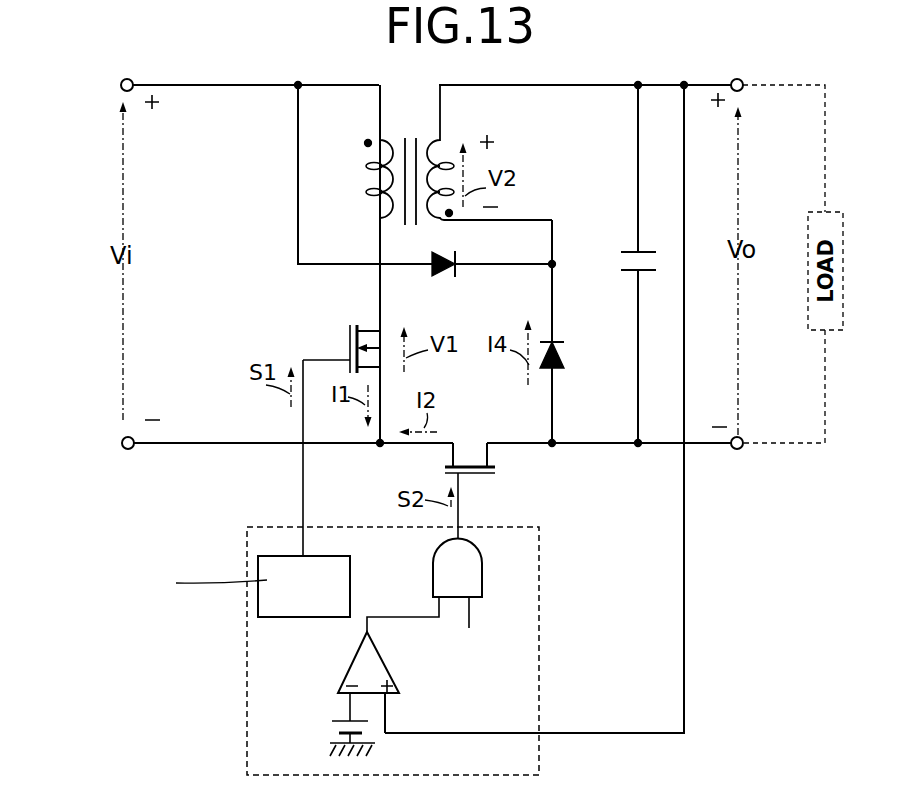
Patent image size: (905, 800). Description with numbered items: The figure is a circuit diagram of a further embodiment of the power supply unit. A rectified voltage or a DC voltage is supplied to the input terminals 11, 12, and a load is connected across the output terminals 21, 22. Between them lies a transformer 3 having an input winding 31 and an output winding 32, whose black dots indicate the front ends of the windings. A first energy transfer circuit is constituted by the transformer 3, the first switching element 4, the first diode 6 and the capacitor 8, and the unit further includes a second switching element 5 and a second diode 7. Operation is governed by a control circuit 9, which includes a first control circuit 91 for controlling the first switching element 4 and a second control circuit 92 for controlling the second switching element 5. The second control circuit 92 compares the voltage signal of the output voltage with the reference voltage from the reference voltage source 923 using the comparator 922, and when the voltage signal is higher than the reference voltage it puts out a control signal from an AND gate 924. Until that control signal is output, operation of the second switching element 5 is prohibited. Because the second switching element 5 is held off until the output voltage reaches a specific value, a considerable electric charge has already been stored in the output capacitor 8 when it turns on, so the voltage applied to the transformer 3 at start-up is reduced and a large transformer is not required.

The input terminal 11 is at (121, 84).
The input terminal 12 is at (122, 442).
The output terminal 21 is at (742, 80).
The output terminal 22 is at (742, 438).
The transformer 3 is at (442, 137).
The input winding 31 is at (376, 180).
The output winding 32 is at (432, 140).
The first switching element 4 is at (352, 338).
The second switching element 5 is at (480, 477).
The first diode 6 is at (557, 342).
The second diode 7 is at (440, 275).
The capacitor 8 is at (626, 264).
The control circuit 9 is at (316, 651).
The first control circuit 91 is at (290, 605).
The second control circuit 92 is at (381, 651).
The comparator 922 is at (347, 672).
The reference voltage source 923 is at (340, 728).
The AND gate 924 is at (436, 575).